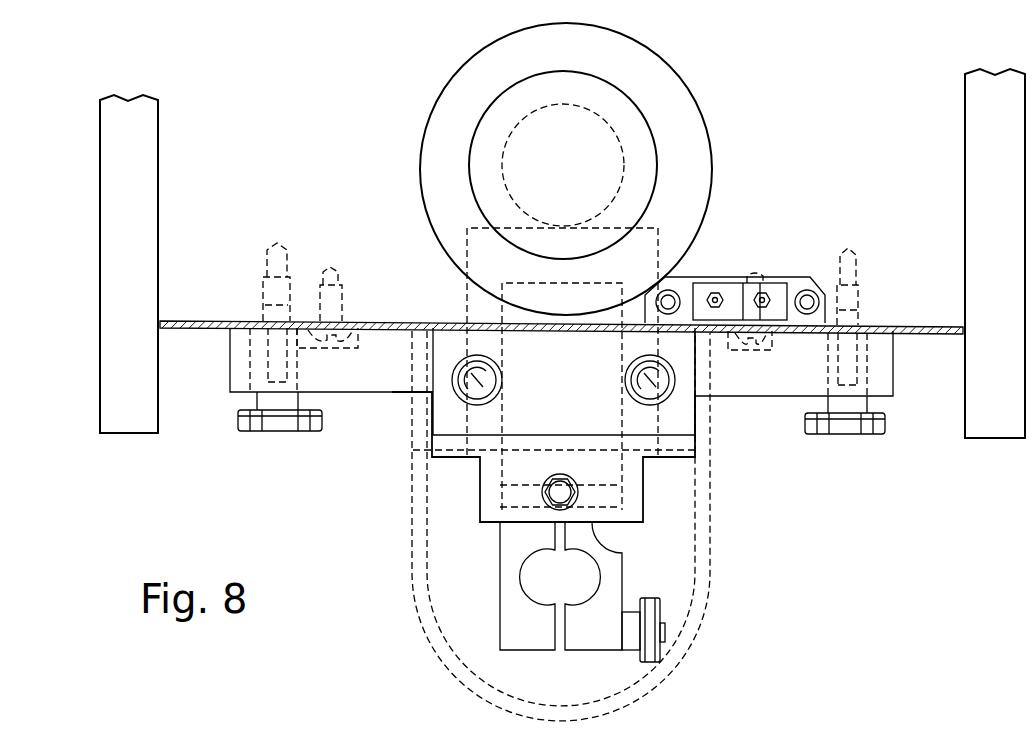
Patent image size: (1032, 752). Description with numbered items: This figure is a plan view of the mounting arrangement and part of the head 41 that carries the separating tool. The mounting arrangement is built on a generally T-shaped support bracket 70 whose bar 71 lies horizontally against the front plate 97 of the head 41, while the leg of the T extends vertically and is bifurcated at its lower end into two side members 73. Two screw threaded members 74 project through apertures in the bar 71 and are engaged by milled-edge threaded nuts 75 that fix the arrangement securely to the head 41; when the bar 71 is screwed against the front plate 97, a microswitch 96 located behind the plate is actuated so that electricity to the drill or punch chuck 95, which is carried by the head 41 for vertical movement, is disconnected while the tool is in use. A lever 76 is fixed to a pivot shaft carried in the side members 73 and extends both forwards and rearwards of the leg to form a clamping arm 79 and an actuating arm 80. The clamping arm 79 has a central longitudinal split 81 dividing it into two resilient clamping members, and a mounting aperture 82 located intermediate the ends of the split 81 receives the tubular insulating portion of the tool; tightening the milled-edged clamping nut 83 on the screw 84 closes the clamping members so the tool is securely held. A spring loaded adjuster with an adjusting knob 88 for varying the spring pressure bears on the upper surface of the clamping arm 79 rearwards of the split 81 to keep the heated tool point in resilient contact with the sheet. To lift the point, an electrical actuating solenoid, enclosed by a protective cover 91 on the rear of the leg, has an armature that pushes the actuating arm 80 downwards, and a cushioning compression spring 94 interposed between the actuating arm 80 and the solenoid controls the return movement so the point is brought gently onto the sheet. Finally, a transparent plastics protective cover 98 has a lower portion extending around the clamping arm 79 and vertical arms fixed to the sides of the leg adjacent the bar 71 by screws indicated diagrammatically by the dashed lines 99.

The head 41 is at (170, 213).
The front plate 97 is at (952, 334).
The bar 71 is at (893, 386).
The support bracket 70 is at (573, 428).
The side members 73 is at (425, 432).
The screws 99 is at (447, 413).
The screw threaded members 74 is at (267, 420).
The milled-edge threaded nuts 75 is at (316, 427).
The drill or punch chuck 95 is at (657, 143).
The cushioning compression spring 94 is at (623, 178).
The protective cover 91 is at (663, 247).
The actuating arm 80 is at (512, 310).
The microswitch 96 is at (793, 277).
The lever 76 is at (510, 480).
The adjusting knob 88 is at (572, 494).
The clamping arm 79 is at (500, 552).
The mounting aperture 82 is at (577, 577).
The central longitudinal split 81 is at (568, 658).
The screw 84 is at (667, 633).
The milled-edged clamping nut 83 is at (656, 662).
The protective cover 98 is at (645, 690).